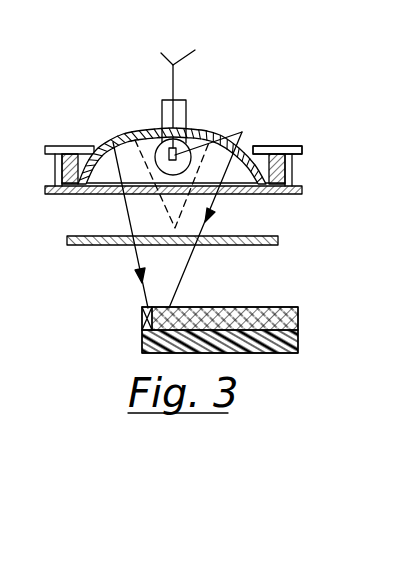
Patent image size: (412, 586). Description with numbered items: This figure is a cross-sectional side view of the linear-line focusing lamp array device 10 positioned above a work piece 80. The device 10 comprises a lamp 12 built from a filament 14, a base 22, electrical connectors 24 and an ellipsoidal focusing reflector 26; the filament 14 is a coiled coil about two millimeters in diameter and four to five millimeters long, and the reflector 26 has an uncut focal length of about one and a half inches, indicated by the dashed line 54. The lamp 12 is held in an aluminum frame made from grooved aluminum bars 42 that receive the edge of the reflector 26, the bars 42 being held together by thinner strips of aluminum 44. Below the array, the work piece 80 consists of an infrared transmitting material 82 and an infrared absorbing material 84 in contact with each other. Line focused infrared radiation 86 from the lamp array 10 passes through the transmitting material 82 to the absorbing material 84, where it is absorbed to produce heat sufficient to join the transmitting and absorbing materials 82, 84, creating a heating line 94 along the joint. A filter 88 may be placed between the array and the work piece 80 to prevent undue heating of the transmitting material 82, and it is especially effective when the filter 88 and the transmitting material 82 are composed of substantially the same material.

The three-lamp linear-line focusing array device 10 is at (133, 100).
The lamp 12 is at (212, 110).
The filament 14 is at (208, 131).
The base 22 is at (187, 100).
The electrical connectors 24 is at (190, 54).
The reflector 26 is at (127, 135).
The aluminum bars 42 is at (300, 160).
The strips of aluminum 44 is at (47, 152).
The focal length 54 is at (185, 200).
The work piece 80 is at (305, 325).
The infrared transmitting material 82 is at (228, 307).
The infrared absorbing material 84 is at (142, 348).
The line focused infrared radiation 86 is at (135, 262).
The filter 88 is at (278, 238).
The heating line 94 is at (142, 312).